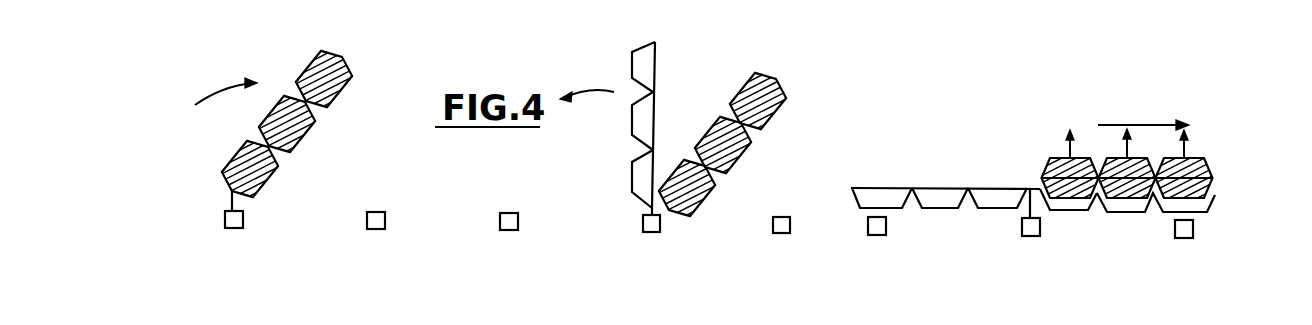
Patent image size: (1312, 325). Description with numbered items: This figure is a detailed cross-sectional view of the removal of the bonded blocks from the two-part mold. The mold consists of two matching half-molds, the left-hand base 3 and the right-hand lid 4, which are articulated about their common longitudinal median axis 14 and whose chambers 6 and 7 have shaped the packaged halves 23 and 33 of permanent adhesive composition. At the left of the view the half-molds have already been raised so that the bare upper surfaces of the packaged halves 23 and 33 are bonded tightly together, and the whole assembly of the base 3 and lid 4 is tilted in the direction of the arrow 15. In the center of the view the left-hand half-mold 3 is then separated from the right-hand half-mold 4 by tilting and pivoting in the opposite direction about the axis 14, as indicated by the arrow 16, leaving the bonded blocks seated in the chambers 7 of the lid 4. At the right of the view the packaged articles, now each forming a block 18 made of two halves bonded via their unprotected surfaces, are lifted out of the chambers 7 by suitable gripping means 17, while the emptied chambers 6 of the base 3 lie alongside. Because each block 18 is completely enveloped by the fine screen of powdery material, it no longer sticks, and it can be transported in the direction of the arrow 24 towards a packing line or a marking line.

The base 3 is at (231, 160).
The lid 4 is at (311, 127).
The chamber 6 is at (642, 175).
The chamber 7 is at (1128, 205).
The longitudinal median axis 14 is at (659, 191).
The arrow 15 is at (209, 90).
The arrow 16 is at (589, 89).
The gripping means 17 is at (1058, 156).
The block 18 is at (1214, 180).
The block of material 23 is at (304, 75).
The arrow 24 is at (1117, 125).
The block of material 33 is at (355, 68).